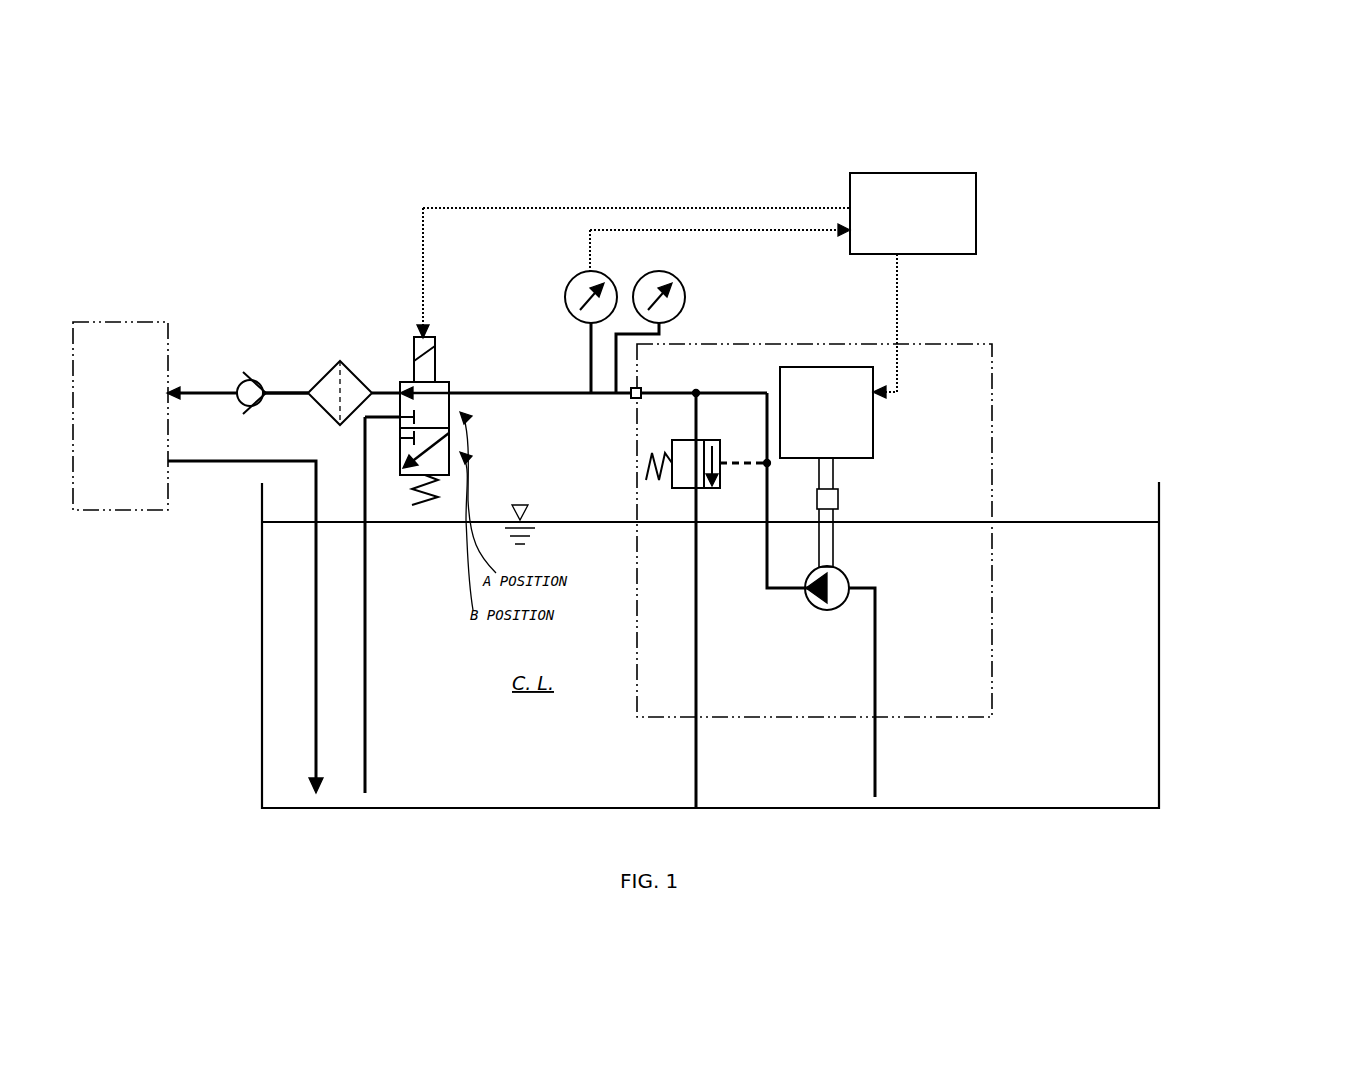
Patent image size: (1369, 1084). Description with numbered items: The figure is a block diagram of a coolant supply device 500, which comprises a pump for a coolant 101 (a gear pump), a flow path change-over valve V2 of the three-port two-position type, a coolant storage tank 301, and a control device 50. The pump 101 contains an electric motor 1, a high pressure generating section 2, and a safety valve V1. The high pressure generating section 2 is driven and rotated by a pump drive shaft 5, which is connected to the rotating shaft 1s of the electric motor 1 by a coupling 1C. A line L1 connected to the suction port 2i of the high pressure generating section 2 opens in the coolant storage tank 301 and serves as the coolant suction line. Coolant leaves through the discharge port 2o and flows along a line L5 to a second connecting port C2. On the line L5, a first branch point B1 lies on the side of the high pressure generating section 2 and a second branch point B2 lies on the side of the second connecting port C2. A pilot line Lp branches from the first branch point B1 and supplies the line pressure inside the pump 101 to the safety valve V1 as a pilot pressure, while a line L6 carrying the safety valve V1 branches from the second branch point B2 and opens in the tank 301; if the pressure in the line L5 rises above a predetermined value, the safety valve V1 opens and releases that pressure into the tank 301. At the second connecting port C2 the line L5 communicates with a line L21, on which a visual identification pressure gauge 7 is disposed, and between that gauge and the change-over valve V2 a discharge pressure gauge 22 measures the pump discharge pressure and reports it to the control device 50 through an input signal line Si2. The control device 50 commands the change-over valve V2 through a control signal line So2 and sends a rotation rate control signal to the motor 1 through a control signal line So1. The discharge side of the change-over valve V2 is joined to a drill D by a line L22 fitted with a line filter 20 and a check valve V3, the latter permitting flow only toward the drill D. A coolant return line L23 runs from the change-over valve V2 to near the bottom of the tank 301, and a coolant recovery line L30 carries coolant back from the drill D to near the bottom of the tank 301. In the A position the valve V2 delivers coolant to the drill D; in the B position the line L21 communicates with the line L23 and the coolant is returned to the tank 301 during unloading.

The drill D is at (116, 322).
The coolant storage tank 301 is at (1159, 492).
The pump for a coolant 101 is at (978, 344).
The line L21 is at (572, 395).
The check valve V3 is at (260, 380).
The line filter 20 is at (340, 361).
The line L22 is at (287, 396).
The flow path change-over valve V2 is at (400, 384).
The control signal line So2 is at (423, 268).
The input signal line Si2 is at (672, 208).
The discharge pressure gauge 22 is at (570, 282).
The visual identification pressure gauge 7 is at (684, 290).
The control device 50 is at (944, 173).
The control signal line So1 is at (897, 296).
The electric motor 1 is at (834, 367).
The rotating shaft 1s is at (827, 482).
The coupling 1C is at (838, 499).
The high pressure generating section 2 is at (810, 604).
The suction port 2i is at (850, 588).
The discharge port 2o is at (805, 592).
The pump drive shaft 5 is at (833, 567).
The line L5 is at (767, 550).
The line L1 is at (875, 742).
The line L6 is at (696, 753).
The second branch point B2 is at (700, 392).
The first branch point B1 is at (765, 467).
The pilot line Lp is at (760, 461).
The second connecting port C2 is at (636, 400).
The safety valve V1 is at (676, 488).
The coolant recovery line L30 is at (316, 672).
The coolant return line L23 is at (365, 698).
The coolant supply device 500 is at (1123, 215).